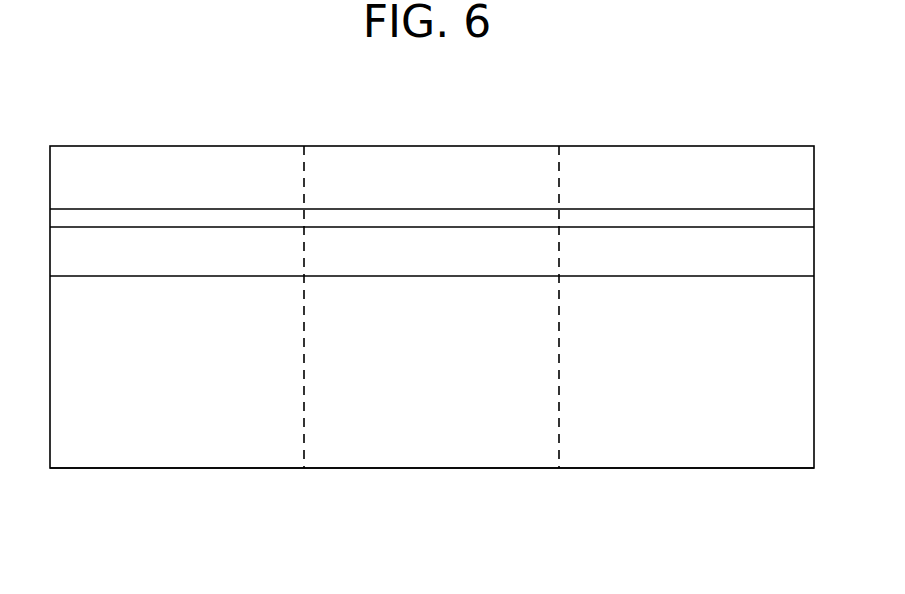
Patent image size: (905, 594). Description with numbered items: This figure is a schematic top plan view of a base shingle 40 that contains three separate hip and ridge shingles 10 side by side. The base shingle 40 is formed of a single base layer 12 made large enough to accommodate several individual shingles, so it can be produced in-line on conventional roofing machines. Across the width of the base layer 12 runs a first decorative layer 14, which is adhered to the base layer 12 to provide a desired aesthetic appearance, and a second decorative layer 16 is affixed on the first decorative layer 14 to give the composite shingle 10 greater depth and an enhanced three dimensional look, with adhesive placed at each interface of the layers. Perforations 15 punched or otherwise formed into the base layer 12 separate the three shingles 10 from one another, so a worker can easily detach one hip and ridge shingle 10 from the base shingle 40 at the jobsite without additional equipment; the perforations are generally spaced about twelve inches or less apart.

The base shingle 40 is at (577, 100).
The hip and ridge shingle 10 is at (180, 140).
The base layer 12 is at (163, 468).
The first decorative layer 14 is at (171, 262).
The perforations 15 is at (305, 338).
The second decorative layer 16 is at (469, 216).